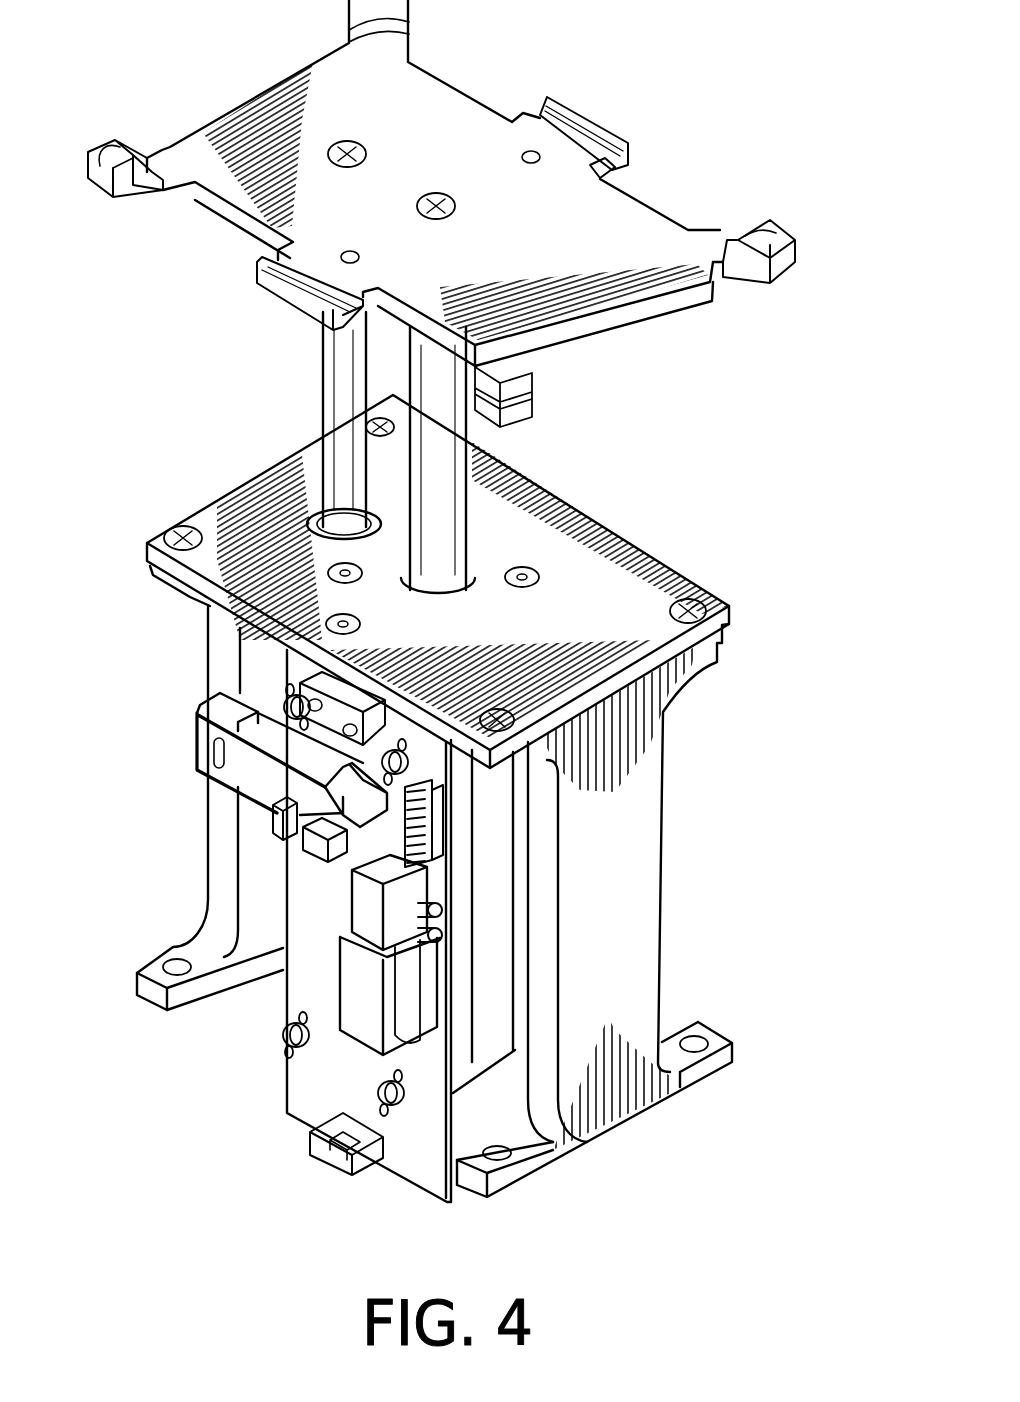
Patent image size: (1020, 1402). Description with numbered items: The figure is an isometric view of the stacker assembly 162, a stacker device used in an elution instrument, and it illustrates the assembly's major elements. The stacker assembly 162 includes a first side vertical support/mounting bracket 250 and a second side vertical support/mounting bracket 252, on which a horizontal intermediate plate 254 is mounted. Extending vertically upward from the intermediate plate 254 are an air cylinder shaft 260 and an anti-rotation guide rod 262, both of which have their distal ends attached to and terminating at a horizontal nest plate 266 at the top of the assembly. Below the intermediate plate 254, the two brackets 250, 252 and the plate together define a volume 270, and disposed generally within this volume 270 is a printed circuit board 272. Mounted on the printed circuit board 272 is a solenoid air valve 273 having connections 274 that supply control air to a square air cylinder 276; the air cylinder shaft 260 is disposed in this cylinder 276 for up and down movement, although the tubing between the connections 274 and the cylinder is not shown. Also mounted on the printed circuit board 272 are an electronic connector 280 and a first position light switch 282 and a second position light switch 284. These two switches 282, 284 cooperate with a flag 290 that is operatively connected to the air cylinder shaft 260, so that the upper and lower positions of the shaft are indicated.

The stacker assembly 162 is at (722, 443).
The first side vertical support/mounting bracket 250 is at (258, 860).
The second side vertical support/mounting bracket 252 is at (628, 880).
The horizontal intermediate plate 254 is at (620, 585).
The air cylinder shaft 260 is at (440, 493).
The anti-rotation guide rod 262 is at (345, 405).
The horizontal nest plate 266 is at (625, 235).
The volume 270 is at (278, 664).
The printed circuit board 272 is at (415, 1162).
The solenoid air valve 273 is at (360, 918).
The connections 274 is at (442, 937).
The square air cylinder 276 is at (493, 1020).
The electronic connector 280 is at (432, 840).
The first position light switch 282 is at (318, 1145).
The second position light switch 284 is at (283, 825).
The flag 290 is at (285, 795).